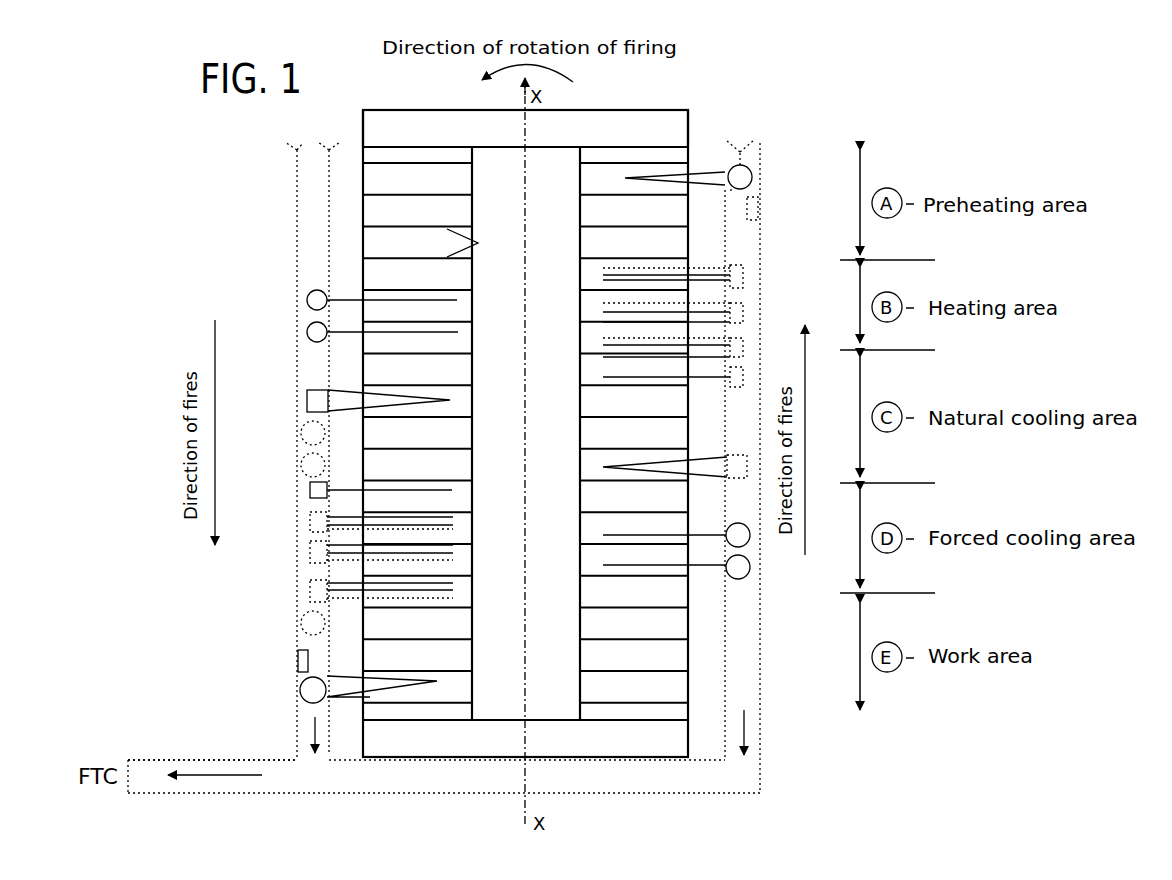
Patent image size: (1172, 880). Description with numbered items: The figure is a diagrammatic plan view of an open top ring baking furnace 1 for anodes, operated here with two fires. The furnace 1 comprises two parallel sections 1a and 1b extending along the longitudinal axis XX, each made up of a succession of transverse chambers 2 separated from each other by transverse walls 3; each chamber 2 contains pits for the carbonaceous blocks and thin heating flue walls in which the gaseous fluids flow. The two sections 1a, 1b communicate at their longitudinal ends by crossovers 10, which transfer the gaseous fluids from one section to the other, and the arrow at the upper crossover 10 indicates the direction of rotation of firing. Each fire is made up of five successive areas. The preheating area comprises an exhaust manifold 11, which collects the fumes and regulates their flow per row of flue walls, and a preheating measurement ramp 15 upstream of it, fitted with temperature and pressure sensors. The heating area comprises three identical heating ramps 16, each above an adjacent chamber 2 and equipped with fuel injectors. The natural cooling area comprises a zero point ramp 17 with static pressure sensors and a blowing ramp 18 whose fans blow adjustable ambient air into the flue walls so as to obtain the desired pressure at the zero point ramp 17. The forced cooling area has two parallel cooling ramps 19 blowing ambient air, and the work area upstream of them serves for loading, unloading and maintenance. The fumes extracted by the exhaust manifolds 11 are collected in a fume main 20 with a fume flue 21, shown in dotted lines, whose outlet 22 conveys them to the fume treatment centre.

The baking furnace 1 is at (699, 99).
The section 1a is at (393, 145).
The section 1b is at (653, 145).
The transverse chamber 2 is at (393, 212).
The transverse wall 3 is at (478, 243).
The crossover 10 is at (615, 127).
The exhaust manifold 11 is at (313, 682).
The preheating measurement ramp 15 is at (347, 675).
The heating ramp 16 is at (305, 590).
The zero point ramp 17 is at (310, 490).
The blowing ramp 18 is at (307, 400).
The cooling ramp 19 is at (309, 329).
The fume main 20 is at (300, 250).
The fume flue 21 is at (475, 773).
The outlet 22 is at (222, 762).